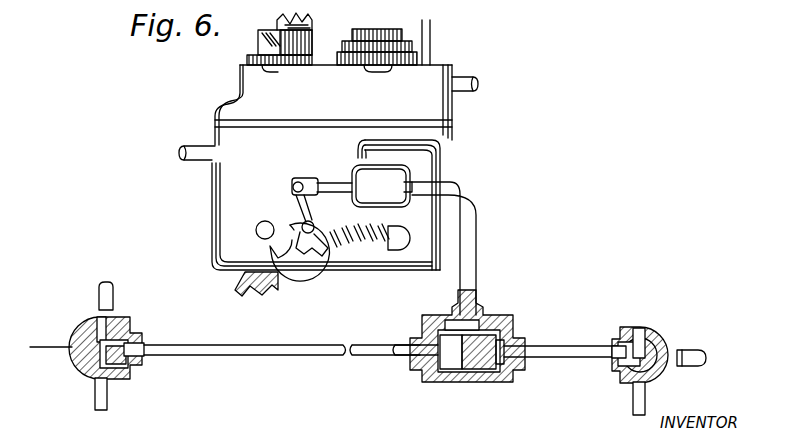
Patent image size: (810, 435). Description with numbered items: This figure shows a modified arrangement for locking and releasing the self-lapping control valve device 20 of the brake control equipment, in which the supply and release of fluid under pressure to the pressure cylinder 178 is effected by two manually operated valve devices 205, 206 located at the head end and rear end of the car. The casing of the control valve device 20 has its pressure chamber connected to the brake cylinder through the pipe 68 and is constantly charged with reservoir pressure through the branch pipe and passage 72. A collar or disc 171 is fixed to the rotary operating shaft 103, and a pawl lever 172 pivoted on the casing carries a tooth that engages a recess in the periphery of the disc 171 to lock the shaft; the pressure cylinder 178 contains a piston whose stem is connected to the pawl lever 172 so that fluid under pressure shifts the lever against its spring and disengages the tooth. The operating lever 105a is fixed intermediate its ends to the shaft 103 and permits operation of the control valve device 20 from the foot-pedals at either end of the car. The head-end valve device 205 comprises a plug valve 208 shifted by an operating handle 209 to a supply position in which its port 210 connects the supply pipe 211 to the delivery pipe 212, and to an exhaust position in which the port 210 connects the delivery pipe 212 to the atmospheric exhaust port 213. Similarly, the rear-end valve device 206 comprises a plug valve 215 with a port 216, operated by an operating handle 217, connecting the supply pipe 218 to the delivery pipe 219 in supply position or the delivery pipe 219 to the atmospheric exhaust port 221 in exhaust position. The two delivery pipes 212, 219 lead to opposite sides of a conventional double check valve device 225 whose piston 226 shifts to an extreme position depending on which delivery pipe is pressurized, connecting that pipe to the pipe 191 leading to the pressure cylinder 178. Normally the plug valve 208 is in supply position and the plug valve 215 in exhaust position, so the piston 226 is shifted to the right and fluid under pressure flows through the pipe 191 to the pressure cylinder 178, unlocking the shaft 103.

The control valve device 20 is at (221, 106).
The pipe 68 is at (193, 143).
The branch pipe and passage 72 is at (463, 79).
The operating lever 105a is at (311, 27).
The pressure cylinder 178 is at (410, 173).
The pipe 191 is at (470, 238).
The collar or disc 171 is at (256, 213).
The rotary operating shaft 103 is at (258, 231).
The pawl lever 172 is at (313, 262).
The manually operated valve device 205 is at (86, 322).
The atmospheric exhaust port 213 is at (110, 322).
The port or passage 210 is at (110, 364).
The plug valve 208 is at (126, 340).
The supply pipe 211 is at (107, 398).
The operating handle 209 is at (100, 281).
The delivery pipe 212 is at (276, 346).
The double check valve device 225 is at (420, 374).
The piston 226 is at (462, 376).
The delivery pipe 219 is at (541, 346).
The manually operated valve device 206 is at (664, 330).
The atmospheric exhaust port 221 is at (646, 328).
The plug valve 215 is at (622, 348).
The port 216 is at (616, 371).
The supply pipe 218 is at (634, 399).
The operating handle 217 is at (694, 352).